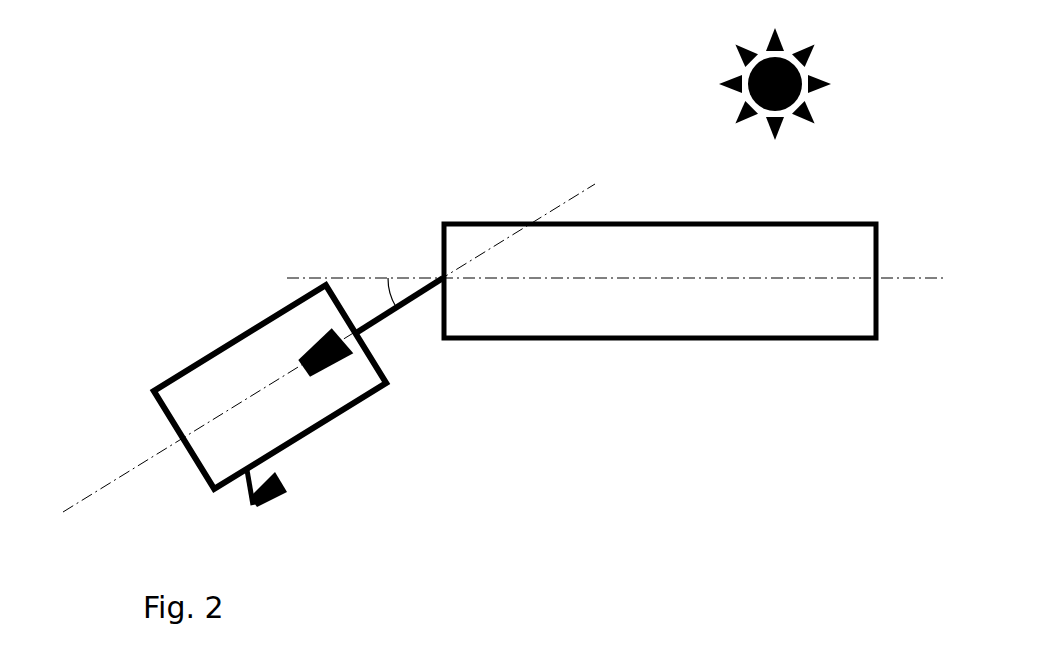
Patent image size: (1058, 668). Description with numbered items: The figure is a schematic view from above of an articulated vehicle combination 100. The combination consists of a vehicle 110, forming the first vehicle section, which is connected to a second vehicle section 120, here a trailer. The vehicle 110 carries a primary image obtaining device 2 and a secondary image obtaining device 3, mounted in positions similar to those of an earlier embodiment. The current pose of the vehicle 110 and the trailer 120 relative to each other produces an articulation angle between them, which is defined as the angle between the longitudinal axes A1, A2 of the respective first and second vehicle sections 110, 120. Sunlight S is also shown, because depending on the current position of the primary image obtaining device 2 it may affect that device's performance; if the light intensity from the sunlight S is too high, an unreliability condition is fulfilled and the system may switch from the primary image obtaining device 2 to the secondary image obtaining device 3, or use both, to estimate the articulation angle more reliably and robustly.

The articulated vehicle combination 100 is at (469, 333).
The vehicle 110 is at (188, 367).
The second vehicle section 120 is at (567, 222).
The primary image obtaining device 2 is at (330, 365).
The secondary image obtaining device 3 is at (272, 500).
The sunlight S is at (700, 81).
The longitudinal axis of the first vehicle section A1 is at (320, 372).
The longitudinal axis of the second vehicle section A2 is at (622, 301).